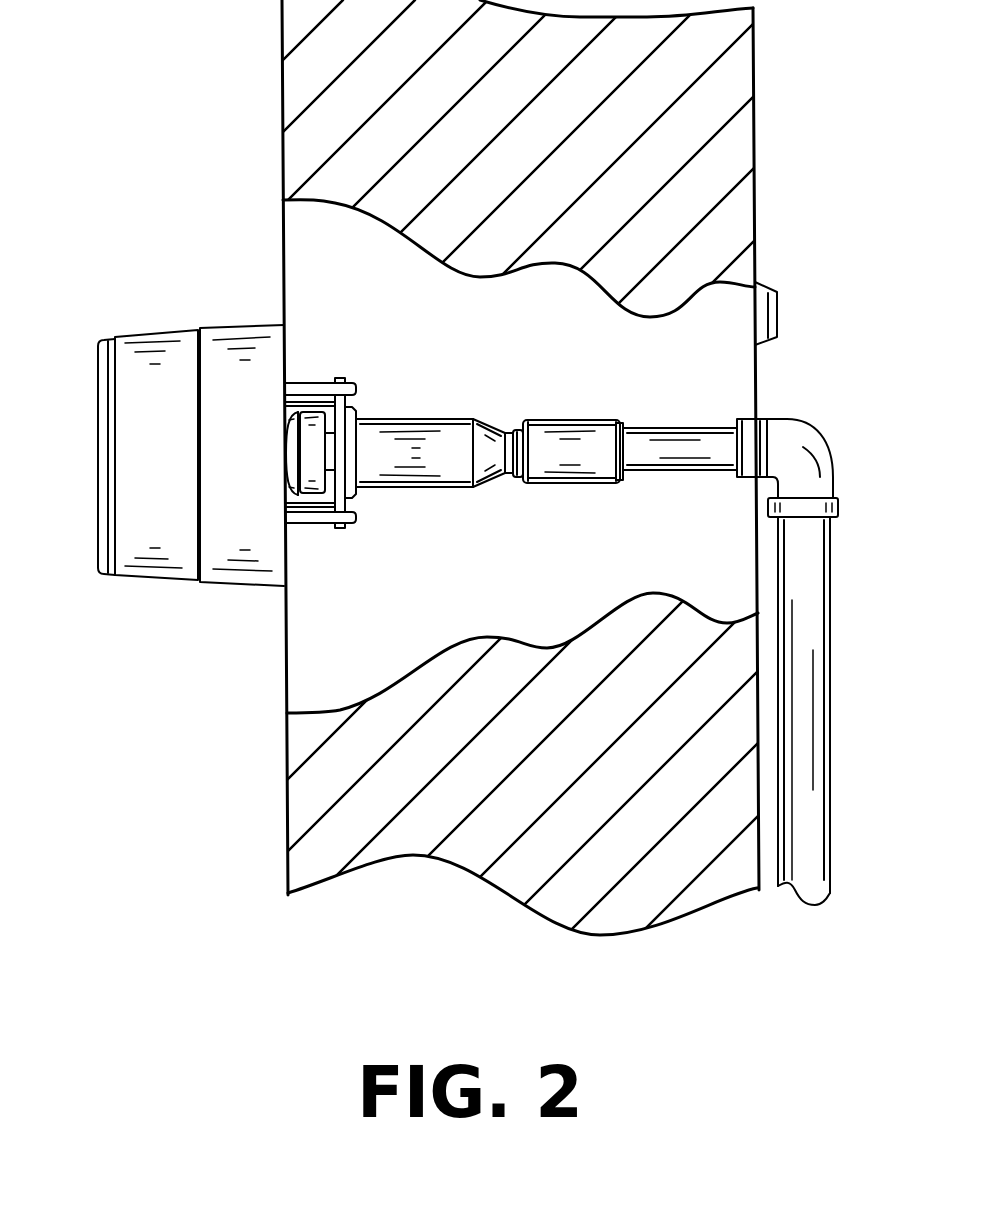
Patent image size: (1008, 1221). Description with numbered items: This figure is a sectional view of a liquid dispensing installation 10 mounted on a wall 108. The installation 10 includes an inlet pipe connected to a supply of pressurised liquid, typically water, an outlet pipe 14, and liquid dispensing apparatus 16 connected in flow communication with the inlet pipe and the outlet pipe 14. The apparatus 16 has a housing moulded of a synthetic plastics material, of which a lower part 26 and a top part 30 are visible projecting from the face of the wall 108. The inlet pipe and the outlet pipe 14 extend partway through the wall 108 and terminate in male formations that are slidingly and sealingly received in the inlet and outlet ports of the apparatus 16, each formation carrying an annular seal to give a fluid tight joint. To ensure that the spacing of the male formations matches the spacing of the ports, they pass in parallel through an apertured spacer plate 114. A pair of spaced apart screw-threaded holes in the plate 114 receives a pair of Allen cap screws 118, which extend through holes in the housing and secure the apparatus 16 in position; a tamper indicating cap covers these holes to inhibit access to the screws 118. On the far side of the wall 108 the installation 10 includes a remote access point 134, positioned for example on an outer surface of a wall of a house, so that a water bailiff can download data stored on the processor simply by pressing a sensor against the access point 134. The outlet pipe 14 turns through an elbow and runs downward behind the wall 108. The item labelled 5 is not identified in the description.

The liquid dispensing installation 10 is at (124, 180).
The outlet pipe 14 is at (828, 613).
The liquid dispensing apparatus 16 is at (98, 378).
The lower part 26 is at (265, 368).
The top part 30 is at (163, 338).
The nozzle assembly 5 is at (356, 383).
The wall 108 is at (287, 810).
The apertured spacer plate 114 is at (345, 528).
The Allen cap screws 118 is at (305, 525).
The remote access point 134 is at (777, 293).